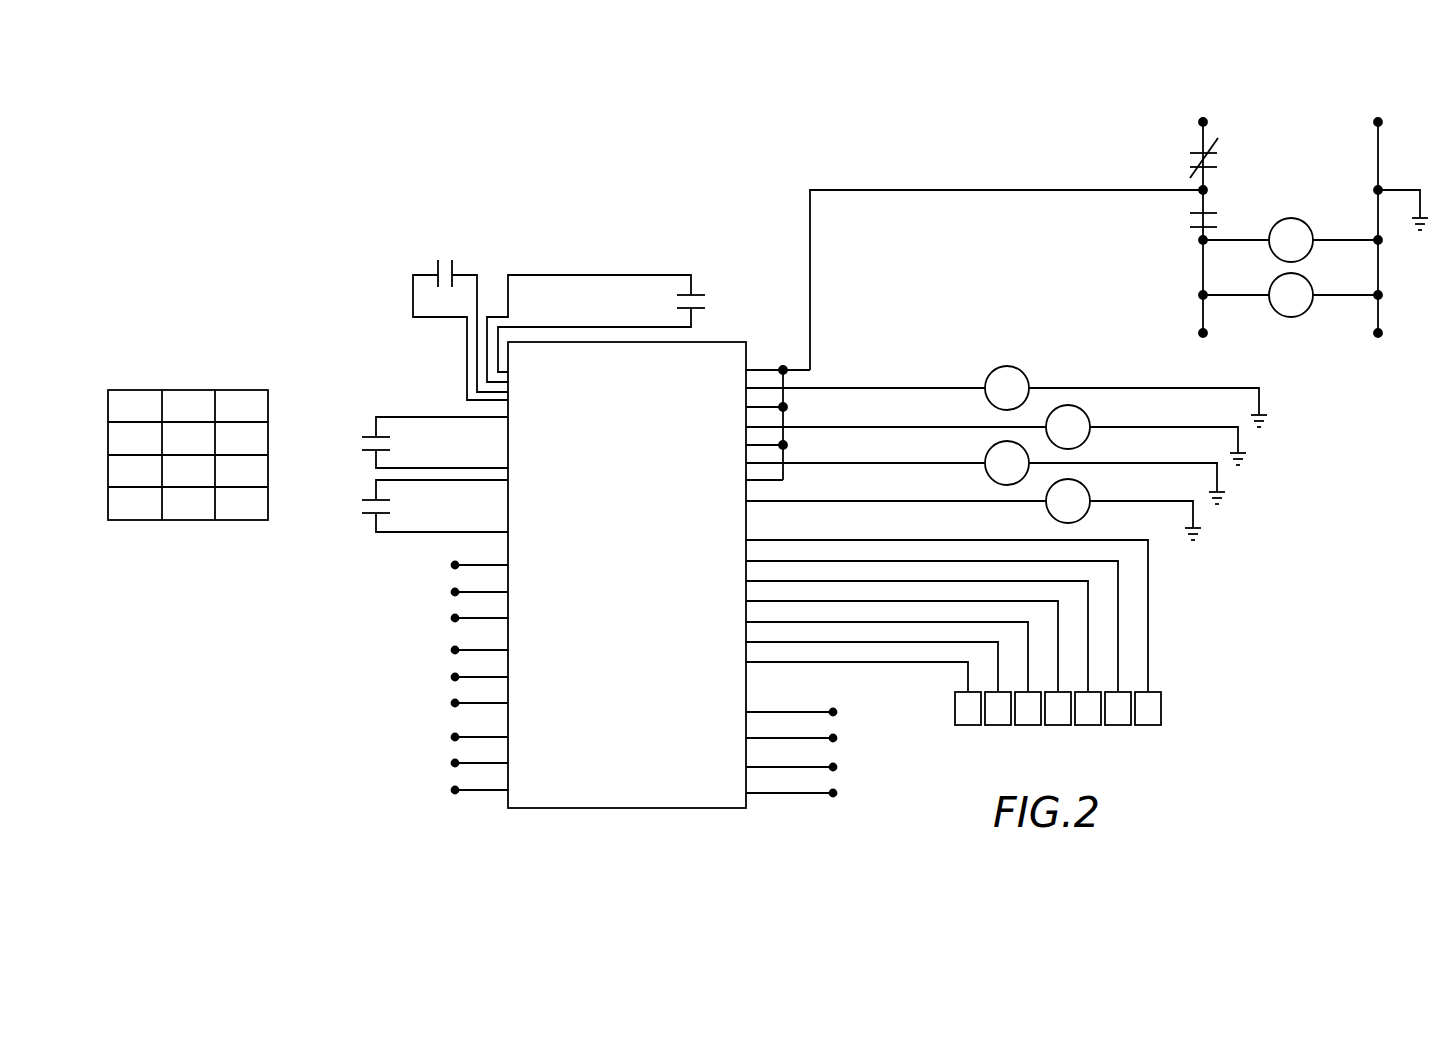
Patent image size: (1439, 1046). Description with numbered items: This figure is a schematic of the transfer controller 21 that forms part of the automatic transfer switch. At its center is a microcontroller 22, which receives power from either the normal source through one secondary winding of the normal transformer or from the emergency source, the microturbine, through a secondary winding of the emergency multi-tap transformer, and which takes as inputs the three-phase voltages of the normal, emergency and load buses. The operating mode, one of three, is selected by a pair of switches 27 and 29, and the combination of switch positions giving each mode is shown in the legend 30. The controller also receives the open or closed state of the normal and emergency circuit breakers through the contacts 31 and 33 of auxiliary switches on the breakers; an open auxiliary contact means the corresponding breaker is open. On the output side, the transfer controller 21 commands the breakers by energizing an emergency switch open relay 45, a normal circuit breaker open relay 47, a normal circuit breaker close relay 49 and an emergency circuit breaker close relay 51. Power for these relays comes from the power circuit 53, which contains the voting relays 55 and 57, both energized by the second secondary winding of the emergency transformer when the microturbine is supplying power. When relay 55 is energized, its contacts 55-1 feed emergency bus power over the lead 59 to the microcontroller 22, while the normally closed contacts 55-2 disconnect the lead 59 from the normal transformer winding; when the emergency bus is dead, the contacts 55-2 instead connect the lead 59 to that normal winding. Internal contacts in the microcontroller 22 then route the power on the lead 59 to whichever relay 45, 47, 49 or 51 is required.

The transfer controller 21 is at (620, 222).
The microcontroller 22 is at (726, 342).
The switch 27 is at (370, 436).
The switch 29 is at (368, 498).
The legend 30 is at (270, 430).
The contact 31 is at (700, 293).
The contact 33 is at (455, 262).
The emergency switch open relay (KEO) 45 is at (1000, 368).
The normal circuit breaker open relay (KNO) 47 is at (1082, 408).
The normal circuit breaker close relay (KNC) 49 is at (990, 448).
The emergency circuit breaker close relay (KEC) 51 is at (1048, 512).
The power circuit 53 is at (1269, 211).
The voting relay (KV) 55 is at (1288, 218).
The contacts 55-1 is at (1193, 228).
The normally closed contacts 55-2 is at (1193, 153).
The voting relay (KE) 57 is at (1298, 318).
The lead 59 is at (1013, 190).